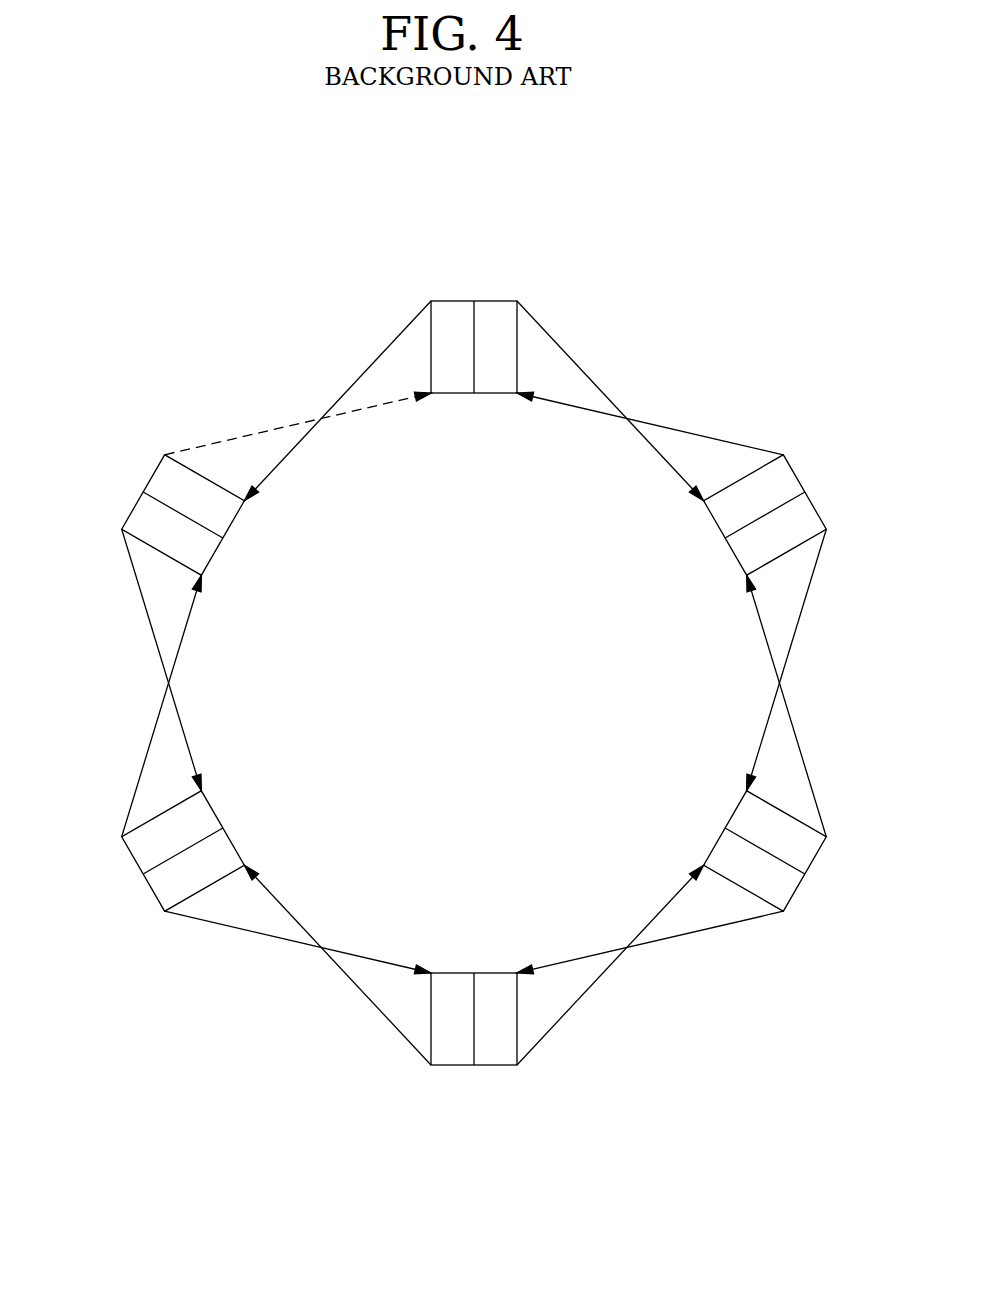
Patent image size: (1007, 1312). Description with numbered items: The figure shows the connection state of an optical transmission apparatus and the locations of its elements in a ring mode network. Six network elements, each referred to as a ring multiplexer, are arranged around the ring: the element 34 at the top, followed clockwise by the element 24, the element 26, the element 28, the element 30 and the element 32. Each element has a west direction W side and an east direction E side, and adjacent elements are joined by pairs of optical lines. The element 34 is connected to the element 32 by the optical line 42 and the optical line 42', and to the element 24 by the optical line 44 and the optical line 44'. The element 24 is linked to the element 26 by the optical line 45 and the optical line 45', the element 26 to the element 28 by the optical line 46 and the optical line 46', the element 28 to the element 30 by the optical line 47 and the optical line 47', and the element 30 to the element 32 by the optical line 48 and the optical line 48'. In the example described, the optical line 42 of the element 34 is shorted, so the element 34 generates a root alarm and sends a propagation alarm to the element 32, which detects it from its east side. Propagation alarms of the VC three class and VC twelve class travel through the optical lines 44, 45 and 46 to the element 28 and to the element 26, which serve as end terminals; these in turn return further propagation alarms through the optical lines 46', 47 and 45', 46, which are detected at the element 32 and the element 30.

The ring multiplexer element 24 is at (805, 493).
The ring multiplexer element 26 is at (805, 872).
The ring multiplexer element 28 is at (473, 1067).
The ring multiplexer element 30 is at (143, 873).
The ring multiplexer element 32 is at (140, 493).
The ring multiplexer element 34 is at (472, 301).
The optical line 42 is at (298, 424).
The optical line 42' is at (337, 392).
The optical line 44 is at (610, 400).
The optical line 44' is at (651, 405).
The optical line 45 is at (786, 660).
The optical line 45' is at (804, 706).
The optical line 46 is at (650, 942).
The optical line 46' is at (610, 969).
The optical line 47 is at (337, 967).
The optical line 47' is at (294, 959).
The optical line 48 is at (161, 706).
The optical line 48' is at (146, 660).